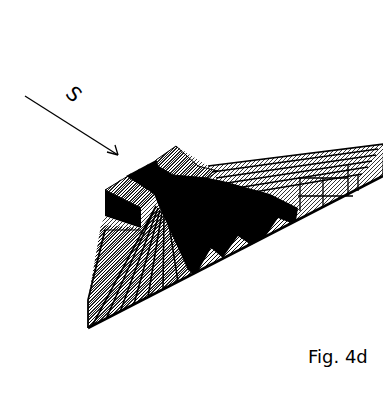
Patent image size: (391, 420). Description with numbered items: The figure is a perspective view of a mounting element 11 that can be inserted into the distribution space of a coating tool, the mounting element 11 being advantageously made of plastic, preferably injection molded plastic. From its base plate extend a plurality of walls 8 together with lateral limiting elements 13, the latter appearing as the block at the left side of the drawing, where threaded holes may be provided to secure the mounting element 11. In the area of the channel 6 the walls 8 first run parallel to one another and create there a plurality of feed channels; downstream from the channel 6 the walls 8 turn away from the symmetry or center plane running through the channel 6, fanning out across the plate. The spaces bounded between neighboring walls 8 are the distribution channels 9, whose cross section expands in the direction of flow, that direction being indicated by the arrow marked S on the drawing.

The channel 6 is at (144, 152).
The walls 8 is at (124, 280).
The distribution channels 9 is at (202, 262).
The mounting element 11 is at (227, 140).
The lateral limiting elements 13 is at (97, 182).